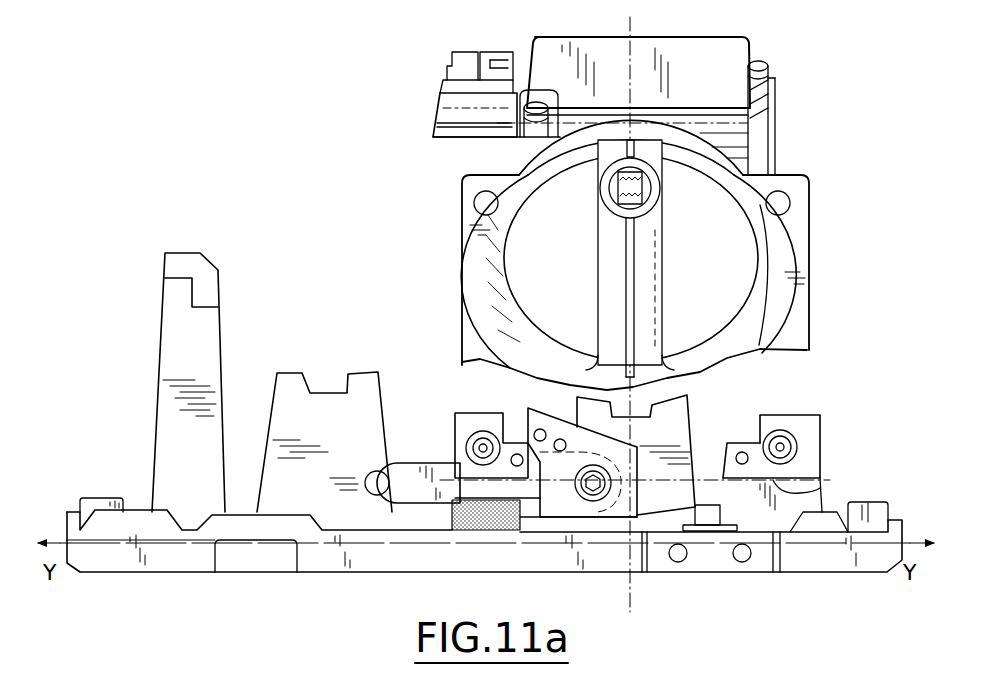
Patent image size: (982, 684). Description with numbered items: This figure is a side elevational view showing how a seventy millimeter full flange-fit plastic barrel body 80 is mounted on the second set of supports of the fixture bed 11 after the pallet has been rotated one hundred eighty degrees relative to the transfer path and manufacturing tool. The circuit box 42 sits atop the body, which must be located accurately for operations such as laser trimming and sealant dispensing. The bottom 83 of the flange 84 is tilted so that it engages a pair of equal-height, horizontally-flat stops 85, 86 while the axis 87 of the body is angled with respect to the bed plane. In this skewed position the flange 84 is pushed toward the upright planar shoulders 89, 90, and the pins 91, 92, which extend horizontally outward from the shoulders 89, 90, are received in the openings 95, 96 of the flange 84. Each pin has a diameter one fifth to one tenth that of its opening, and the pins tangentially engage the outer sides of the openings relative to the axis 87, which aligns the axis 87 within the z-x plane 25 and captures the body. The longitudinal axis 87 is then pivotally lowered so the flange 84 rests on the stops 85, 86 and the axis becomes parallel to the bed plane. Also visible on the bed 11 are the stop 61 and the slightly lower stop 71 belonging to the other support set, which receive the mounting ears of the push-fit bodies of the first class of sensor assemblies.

The fixture bed 11 is at (178, 558).
The z-x plane 25 is at (640, 188).
The circuit box 42 is at (720, 56).
The stop 61 is at (213, 305).
The stop 71 is at (185, 277).
The full flange-fit plastic barrel body 80 is at (772, 240).
The bottom of flange 83 is at (823, 490).
The flange 84 is at (810, 305).
The horizontally-flat stop 85 is at (723, 442).
The horizontally-flat stop 86 is at (457, 462).
The axis of the body 87 is at (642, 267).
The upright planar shoulder 89 is at (817, 435).
The upright planar shoulder 90 is at (458, 455).
The pin 91 is at (782, 440).
The pin 92 is at (483, 430).
The opening of the flange 95 is at (775, 455).
The opening of the flange 96 is at (514, 428).